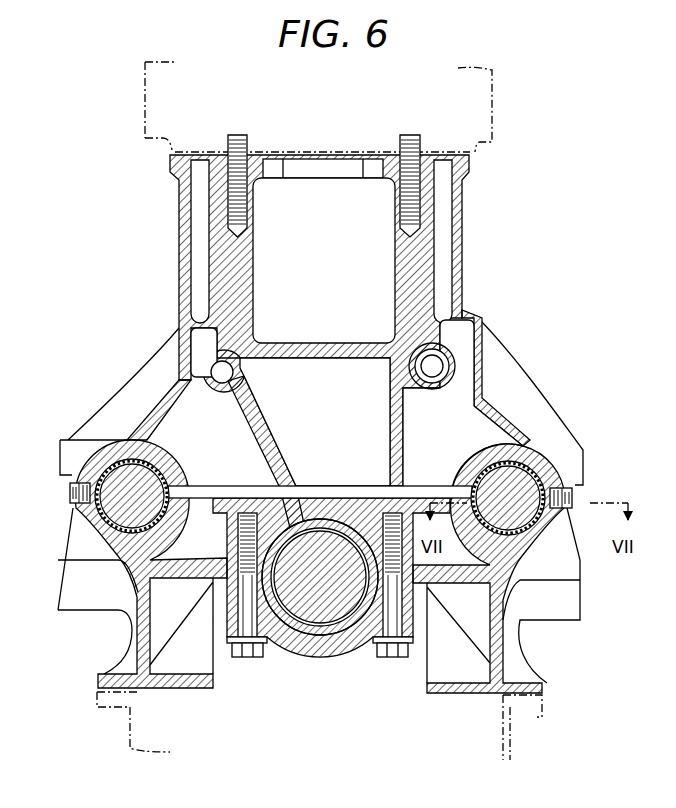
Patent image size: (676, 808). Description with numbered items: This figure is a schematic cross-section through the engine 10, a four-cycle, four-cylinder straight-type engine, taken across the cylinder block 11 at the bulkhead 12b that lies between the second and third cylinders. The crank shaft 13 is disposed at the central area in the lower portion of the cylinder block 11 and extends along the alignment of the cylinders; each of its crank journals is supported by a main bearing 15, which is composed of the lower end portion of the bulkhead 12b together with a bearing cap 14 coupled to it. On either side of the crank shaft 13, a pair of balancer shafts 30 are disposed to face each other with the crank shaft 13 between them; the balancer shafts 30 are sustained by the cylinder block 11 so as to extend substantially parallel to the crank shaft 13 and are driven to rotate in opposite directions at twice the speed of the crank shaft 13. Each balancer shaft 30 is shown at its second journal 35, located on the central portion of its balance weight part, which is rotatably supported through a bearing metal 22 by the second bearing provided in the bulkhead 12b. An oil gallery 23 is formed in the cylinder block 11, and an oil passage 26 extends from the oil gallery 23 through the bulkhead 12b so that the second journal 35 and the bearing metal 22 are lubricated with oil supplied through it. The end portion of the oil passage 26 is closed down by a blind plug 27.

The engine 10 is at (522, 182).
The cylinder block 11 is at (465, 262).
The bulkhead 12b is at (316, 484).
The crank shaft 13 is at (306, 612).
The bearing cap 14 is at (323, 648).
The main bearing 15 is at (354, 657).
The bearing metal 22 is at (107, 533).
The oil gallery 23 is at (234, 373).
The oil passage 26 is at (213, 490).
The blind plug 27 is at (70, 493).
The balancer shaft 30 is at (341, 446).
The second journal 35 is at (120, 470).